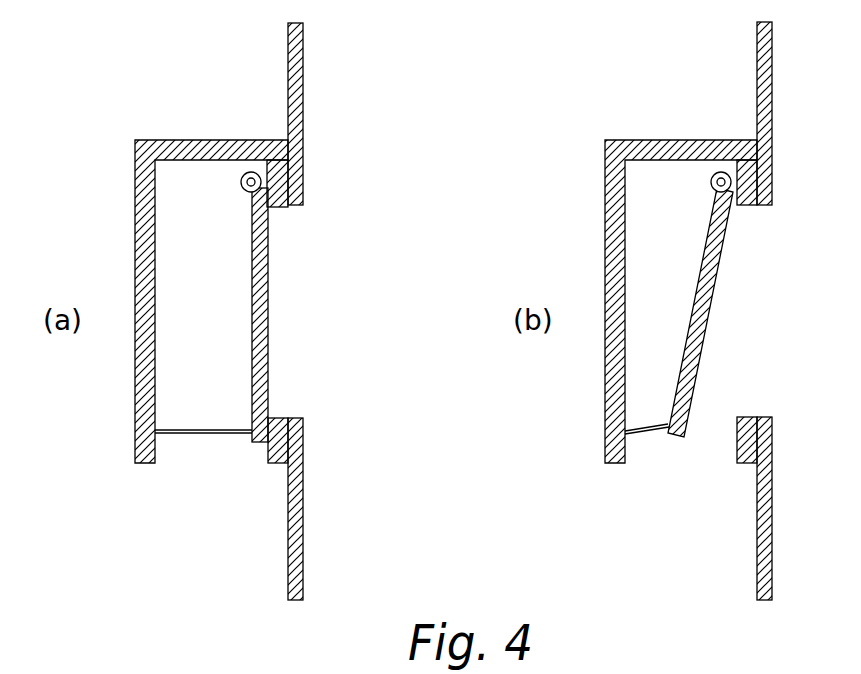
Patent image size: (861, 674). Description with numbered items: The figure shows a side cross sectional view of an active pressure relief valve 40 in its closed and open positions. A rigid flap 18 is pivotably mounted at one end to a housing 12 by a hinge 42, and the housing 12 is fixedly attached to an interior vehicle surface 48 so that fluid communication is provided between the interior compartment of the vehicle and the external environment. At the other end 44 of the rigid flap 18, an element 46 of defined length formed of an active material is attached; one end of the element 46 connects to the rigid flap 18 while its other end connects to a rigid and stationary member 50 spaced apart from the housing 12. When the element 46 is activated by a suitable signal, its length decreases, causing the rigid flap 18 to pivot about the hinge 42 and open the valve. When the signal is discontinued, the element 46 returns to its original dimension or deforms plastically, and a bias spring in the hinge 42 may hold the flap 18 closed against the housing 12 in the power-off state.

The active pressure relief valve 40 is at (90, 112).
The housing 12 is at (278, 207).
The rigid flap 18 is at (268, 305).
The hinge 42 is at (244, 183).
The other end of the rigid flap 44 is at (250, 442).
The element of active material 46 is at (196, 433).
The interior vehicle surface 48 is at (289, 525).
The rigid and stationary member 50 is at (135, 395).